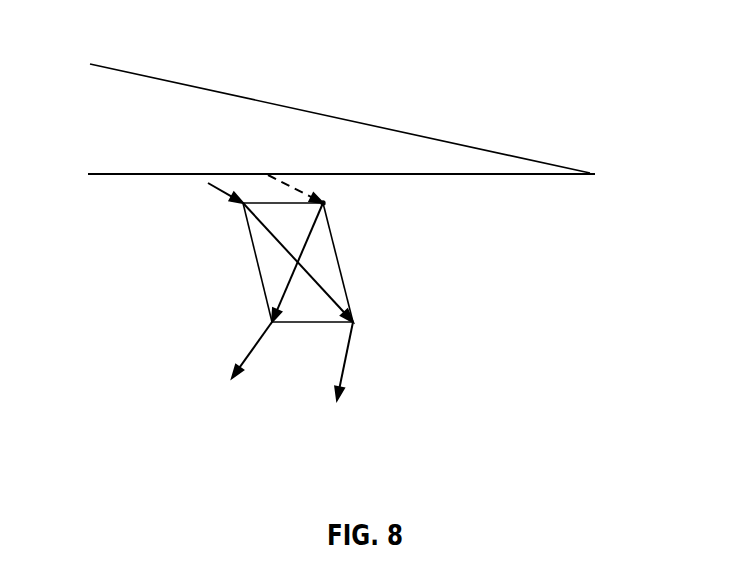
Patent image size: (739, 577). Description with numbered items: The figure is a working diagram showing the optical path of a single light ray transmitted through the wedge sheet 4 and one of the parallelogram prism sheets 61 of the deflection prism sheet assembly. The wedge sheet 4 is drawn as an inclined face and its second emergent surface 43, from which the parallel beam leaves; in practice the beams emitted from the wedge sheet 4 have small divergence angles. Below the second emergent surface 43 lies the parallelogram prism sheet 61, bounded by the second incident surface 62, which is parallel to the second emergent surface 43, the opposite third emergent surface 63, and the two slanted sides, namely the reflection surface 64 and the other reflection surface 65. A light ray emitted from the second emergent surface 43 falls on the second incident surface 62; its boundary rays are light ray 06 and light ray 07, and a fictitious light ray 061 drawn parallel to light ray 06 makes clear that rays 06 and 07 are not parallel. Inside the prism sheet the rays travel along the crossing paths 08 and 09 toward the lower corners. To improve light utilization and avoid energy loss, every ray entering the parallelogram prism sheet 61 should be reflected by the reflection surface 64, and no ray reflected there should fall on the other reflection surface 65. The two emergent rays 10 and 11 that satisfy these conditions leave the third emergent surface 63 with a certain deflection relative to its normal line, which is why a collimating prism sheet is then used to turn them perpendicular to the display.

The wedge sheet 4 is at (398, 143).
The second emergent surface 43 is at (88, 174).
The light ray 06 is at (217, 200).
The light ray 07 is at (282, 189).
The fictitious light ray 061 is at (342, 203).
The diagonal arrow to lower right 08 is at (298, 262).
The diagonal arrow to lower left 09 is at (297, 262).
The emergent ray 10 is at (335, 374).
The emergent ray 11 is at (245, 363).
The parallelogram prism sheet 61 is at (278, 263).
The second incident surface 62 is at (317, 196).
The third emergent surface 63 is at (305, 325).
The reflection surface 64 is at (343, 273).
The reflection surface 65 is at (255, 263).